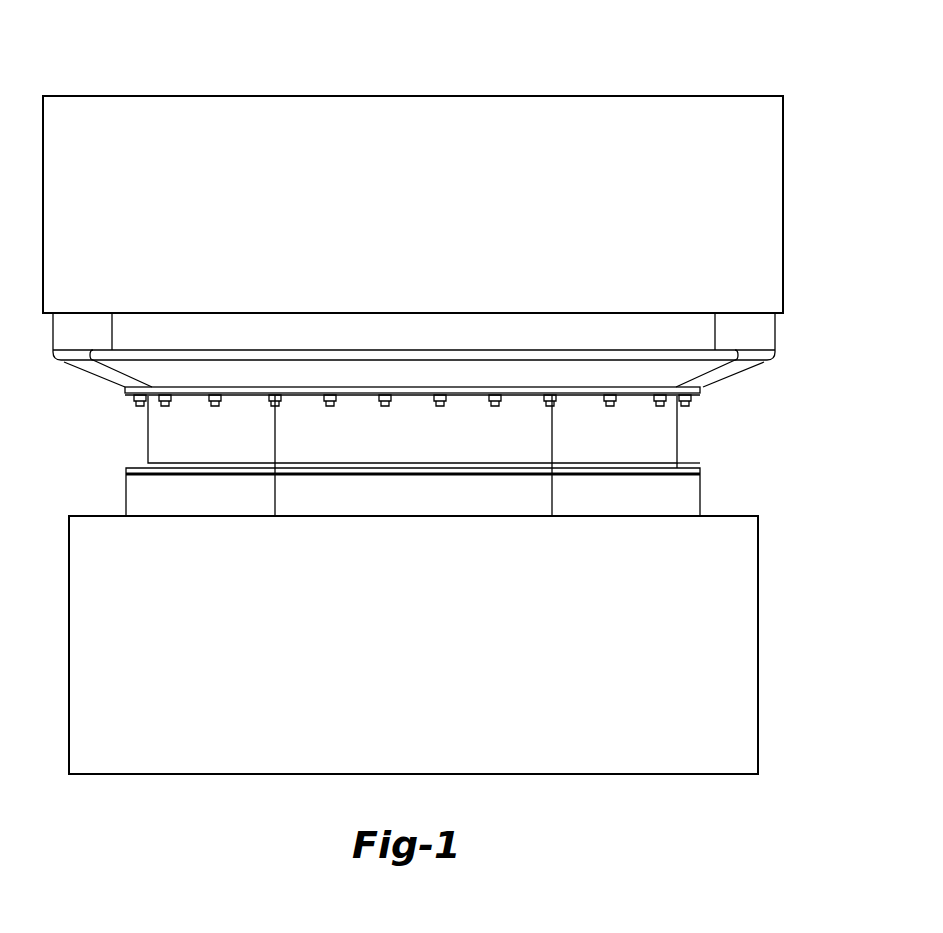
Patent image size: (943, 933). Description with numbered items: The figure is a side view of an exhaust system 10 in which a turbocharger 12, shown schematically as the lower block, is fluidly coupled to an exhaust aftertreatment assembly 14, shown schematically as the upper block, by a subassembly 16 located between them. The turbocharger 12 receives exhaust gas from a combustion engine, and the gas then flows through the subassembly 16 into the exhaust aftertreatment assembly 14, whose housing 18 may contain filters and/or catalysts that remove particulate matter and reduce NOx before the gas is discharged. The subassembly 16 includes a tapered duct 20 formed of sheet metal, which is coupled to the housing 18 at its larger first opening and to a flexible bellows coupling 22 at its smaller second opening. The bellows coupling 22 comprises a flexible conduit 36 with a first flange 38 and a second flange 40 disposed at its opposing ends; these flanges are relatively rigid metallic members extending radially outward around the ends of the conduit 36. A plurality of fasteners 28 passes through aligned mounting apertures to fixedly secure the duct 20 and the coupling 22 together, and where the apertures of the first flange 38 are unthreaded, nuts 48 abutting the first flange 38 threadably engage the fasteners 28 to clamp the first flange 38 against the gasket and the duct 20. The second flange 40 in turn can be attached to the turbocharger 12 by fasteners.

The exhaust system 10 is at (388, 75).
The turbocharger 12 is at (574, 757).
The exhaust aftertreatment assembly 14 is at (670, 96).
The subassembly 16 is at (737, 440).
The housing 18 is at (770, 236).
The tapered duct 20 is at (775, 330).
The flexible bellows coupling 22 is at (147, 448).
The fasteners 28 is at (215, 407).
The flexible conduit 36 is at (670, 425).
The first flange 38 is at (575, 390).
The second flange 40 is at (693, 456).
The nuts 48 is at (133, 398).